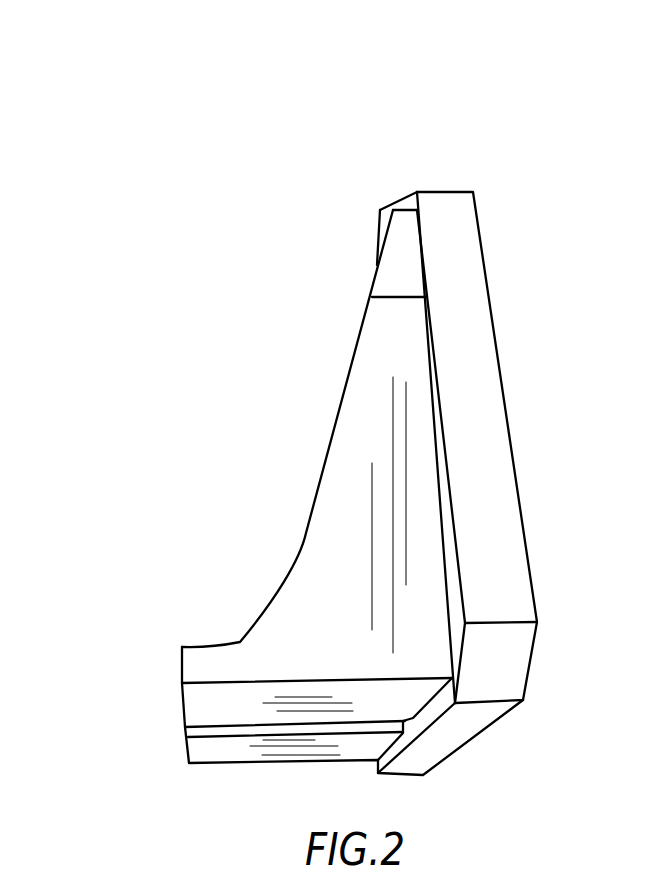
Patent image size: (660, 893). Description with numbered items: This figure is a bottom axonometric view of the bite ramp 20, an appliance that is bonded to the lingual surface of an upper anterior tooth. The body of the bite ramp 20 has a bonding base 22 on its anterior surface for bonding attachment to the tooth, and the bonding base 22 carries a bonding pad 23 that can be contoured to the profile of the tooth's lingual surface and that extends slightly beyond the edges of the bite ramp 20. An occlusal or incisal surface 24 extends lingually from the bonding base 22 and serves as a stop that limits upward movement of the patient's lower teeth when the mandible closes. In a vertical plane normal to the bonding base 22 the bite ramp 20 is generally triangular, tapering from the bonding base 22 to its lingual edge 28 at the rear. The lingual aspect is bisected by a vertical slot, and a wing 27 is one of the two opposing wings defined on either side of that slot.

The bite ramp 20 is at (463, 147).
The bonding base 22 is at (497, 352).
The bonding pad 23 is at (470, 297).
The occlusal surface 24 is at (202, 739).
The wing 27 is at (343, 628).
The lingual edge 28 is at (180, 665).